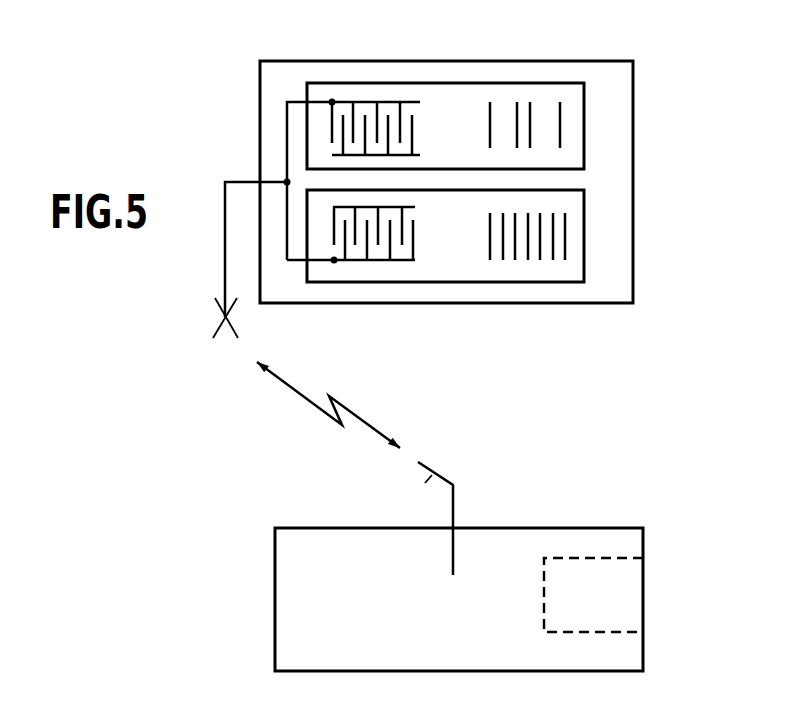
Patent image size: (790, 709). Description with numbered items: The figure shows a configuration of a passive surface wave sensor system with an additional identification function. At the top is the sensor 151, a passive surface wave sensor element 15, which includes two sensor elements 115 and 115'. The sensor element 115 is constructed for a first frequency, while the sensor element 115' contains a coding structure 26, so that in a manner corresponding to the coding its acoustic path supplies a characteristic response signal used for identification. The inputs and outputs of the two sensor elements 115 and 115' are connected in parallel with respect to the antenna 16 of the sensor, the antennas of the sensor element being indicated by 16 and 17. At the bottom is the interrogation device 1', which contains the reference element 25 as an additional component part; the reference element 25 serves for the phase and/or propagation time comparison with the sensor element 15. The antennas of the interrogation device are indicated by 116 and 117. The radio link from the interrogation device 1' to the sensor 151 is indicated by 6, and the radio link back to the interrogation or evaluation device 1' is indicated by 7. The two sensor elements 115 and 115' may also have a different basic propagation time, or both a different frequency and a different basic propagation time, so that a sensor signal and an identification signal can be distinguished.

The passive surface wave sensor element 15 is at (502, 182).
The sensor 151 is at (650, 108).
The coding structure 26 is at (488, 117).
The sensor element 115' is at (445, 126).
The sensor element 115 is at (435, 236).
The antenna 16 is at (242, 219).
The antenna 17 is at (242, 219).
The radio link 6 is at (328, 408).
The radio link 7 is at (328, 408).
The antenna 116 is at (483, 518).
The antenna 117 is at (483, 518).
The interrogation device 1' is at (459, 599).
The reference element 25 is at (593, 595).